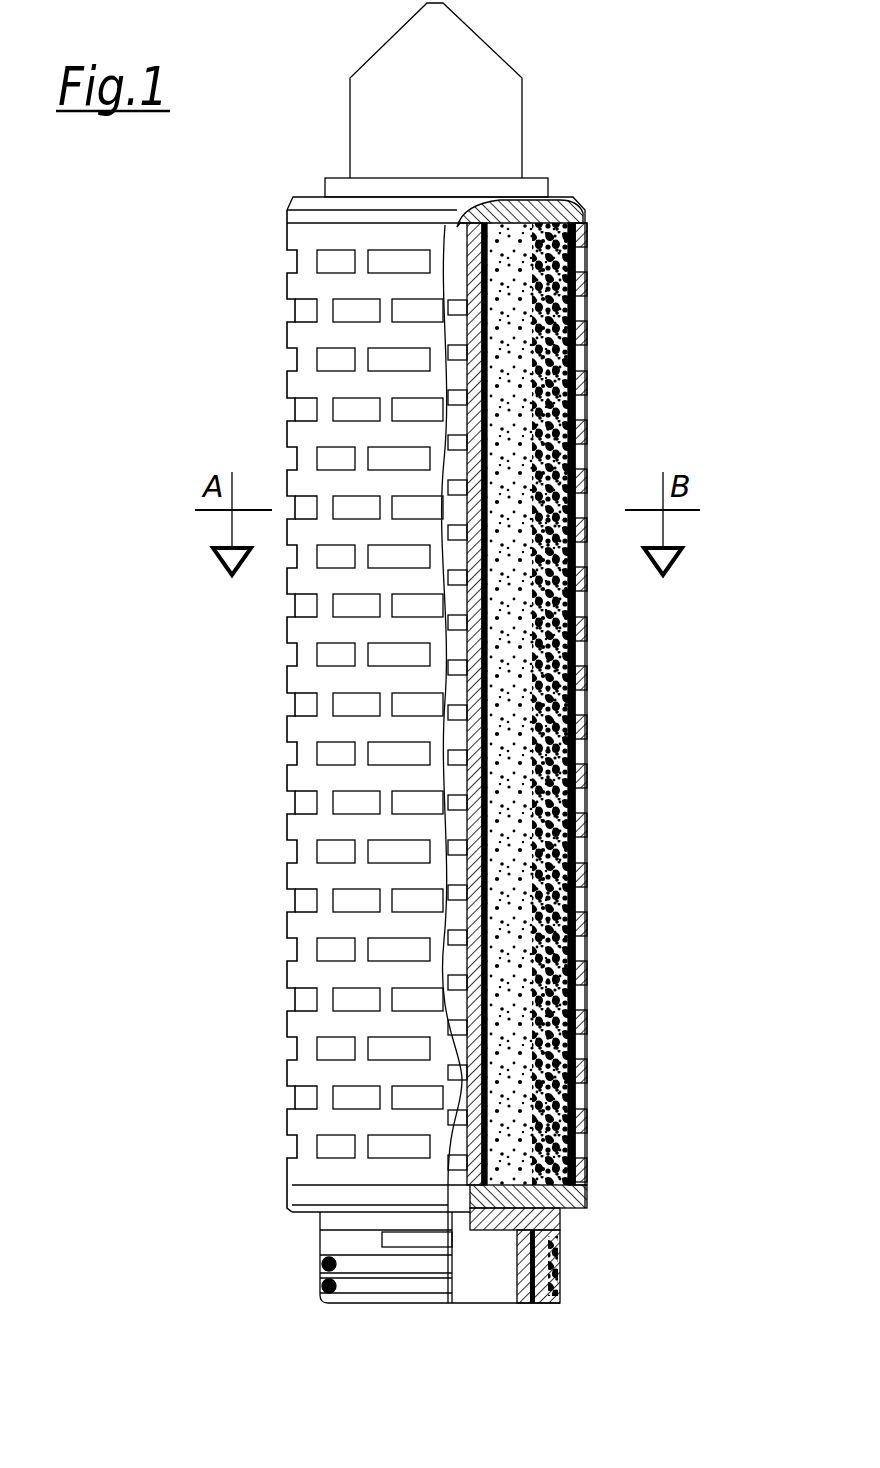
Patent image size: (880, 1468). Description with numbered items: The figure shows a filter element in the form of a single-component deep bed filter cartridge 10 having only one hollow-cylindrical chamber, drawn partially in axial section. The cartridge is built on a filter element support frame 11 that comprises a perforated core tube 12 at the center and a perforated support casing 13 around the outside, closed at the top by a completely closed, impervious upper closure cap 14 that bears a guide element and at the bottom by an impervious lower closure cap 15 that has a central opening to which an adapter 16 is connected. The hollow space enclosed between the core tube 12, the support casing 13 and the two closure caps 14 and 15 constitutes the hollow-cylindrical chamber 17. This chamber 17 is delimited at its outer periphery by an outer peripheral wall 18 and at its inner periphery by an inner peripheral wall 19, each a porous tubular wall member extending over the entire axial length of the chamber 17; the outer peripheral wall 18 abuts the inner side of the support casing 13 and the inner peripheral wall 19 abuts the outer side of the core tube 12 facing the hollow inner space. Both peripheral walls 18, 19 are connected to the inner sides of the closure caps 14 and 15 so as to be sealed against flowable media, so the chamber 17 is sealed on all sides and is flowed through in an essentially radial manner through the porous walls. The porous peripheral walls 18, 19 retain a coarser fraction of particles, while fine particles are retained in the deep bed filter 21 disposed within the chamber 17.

The deep bed filter cartridge 10 is at (625, 141).
The filter element support frame 11 is at (258, 633).
The perforated core tube 12 is at (467, 325).
The perforated support casing 13 is at (588, 632).
The upper closure cap 14 is at (357, 214).
The lower closure cap 15 is at (385, 1195).
The adapter 16 is at (560, 1237).
The hollow-cylindrical chamber 17 is at (536, 410).
The outer peripheral wall 18 is at (575, 310).
The inner peripheral wall 19 is at (483, 494).
The deep bed filter 21 is at (588, 765).